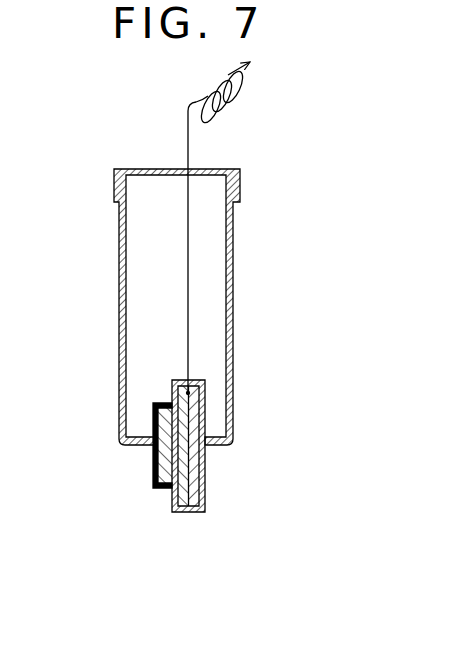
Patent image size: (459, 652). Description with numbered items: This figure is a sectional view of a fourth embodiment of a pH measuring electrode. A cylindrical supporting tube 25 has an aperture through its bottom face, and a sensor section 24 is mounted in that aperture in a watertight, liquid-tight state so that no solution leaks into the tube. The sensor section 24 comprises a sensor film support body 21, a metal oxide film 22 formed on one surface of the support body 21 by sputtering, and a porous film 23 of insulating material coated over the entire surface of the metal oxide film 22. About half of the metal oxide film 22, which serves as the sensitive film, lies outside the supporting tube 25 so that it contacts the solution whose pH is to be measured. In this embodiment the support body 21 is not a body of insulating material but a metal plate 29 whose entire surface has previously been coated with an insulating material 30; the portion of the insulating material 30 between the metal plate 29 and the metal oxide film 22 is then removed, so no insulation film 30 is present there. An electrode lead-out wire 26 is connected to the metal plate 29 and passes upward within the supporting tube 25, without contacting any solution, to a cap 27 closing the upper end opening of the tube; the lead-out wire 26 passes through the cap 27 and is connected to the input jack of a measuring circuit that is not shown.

The sensor film support body 21 is at (179, 494).
The metal oxide film 22 is at (165, 480).
The porous film 23 is at (155, 455).
The sensor section 24 is at (158, 526).
The supporting tube 25 is at (232, 332).
The electrode lead-out wire 26 is at (166, 228).
The cap 27 is at (212, 169).
The metal plate 29 is at (188, 507).
The insulating material 30 is at (205, 493).